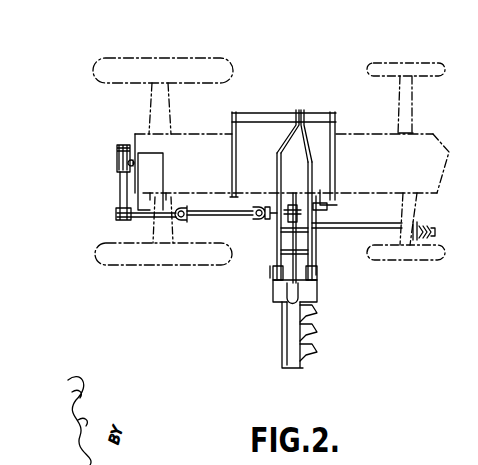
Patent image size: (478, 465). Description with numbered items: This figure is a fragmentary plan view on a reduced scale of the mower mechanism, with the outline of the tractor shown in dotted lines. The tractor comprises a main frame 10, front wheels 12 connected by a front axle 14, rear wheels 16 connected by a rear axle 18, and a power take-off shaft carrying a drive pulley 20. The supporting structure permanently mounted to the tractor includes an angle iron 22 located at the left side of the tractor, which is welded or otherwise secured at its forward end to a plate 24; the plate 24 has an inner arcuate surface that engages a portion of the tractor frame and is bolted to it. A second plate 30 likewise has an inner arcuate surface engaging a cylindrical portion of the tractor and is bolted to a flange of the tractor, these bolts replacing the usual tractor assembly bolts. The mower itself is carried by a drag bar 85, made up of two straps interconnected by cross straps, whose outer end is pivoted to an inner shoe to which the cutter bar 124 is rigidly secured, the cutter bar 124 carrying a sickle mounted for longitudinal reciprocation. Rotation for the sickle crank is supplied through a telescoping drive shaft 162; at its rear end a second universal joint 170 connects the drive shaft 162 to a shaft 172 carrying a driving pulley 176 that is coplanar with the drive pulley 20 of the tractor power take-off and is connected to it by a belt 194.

The main frame 10 is at (446, 149).
The front wheels 12 is at (432, 263).
The front axle 14 is at (411, 94).
The rear wheels 16 is at (186, 266).
The rear axle 18 is at (168, 87).
The drive pulley 20 is at (117, 152).
The angle iron 22 is at (258, 115).
The plate 24 is at (338, 119).
The second plate 30 is at (232, 124).
The drag bar 85 is at (274, 175).
The cutter bar 124 is at (281, 342).
The drive shaft 162 is at (232, 223).
The second universal joint 170 is at (196, 227).
The shaft 172 is at (145, 219).
The driving pulley 176 is at (116, 215).
The belt 194 is at (117, 190).